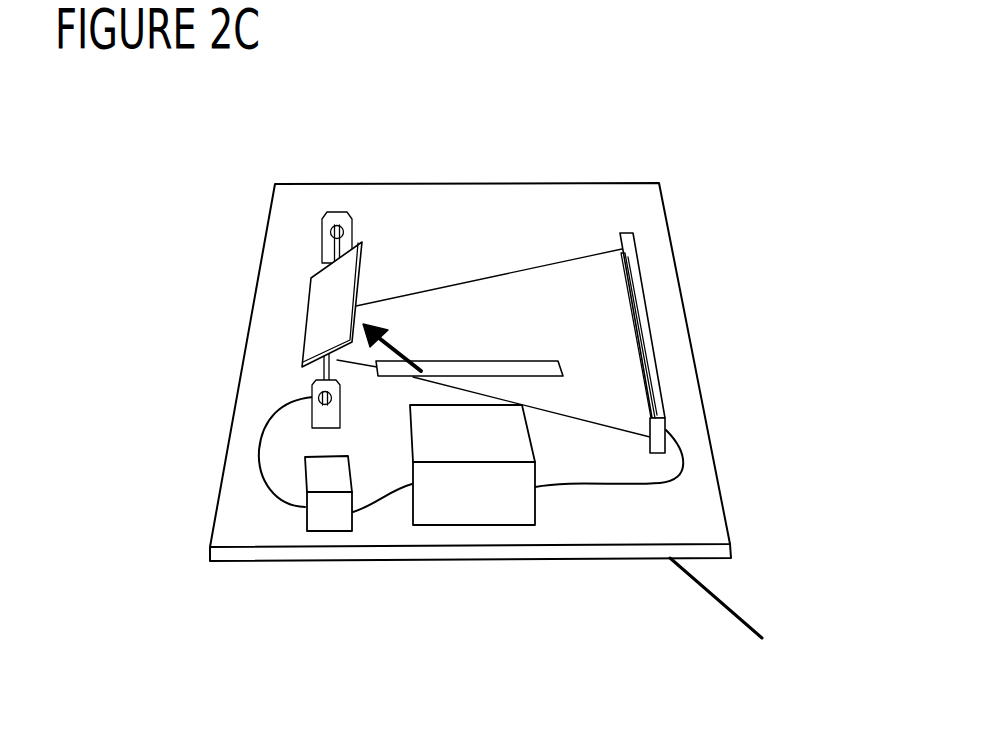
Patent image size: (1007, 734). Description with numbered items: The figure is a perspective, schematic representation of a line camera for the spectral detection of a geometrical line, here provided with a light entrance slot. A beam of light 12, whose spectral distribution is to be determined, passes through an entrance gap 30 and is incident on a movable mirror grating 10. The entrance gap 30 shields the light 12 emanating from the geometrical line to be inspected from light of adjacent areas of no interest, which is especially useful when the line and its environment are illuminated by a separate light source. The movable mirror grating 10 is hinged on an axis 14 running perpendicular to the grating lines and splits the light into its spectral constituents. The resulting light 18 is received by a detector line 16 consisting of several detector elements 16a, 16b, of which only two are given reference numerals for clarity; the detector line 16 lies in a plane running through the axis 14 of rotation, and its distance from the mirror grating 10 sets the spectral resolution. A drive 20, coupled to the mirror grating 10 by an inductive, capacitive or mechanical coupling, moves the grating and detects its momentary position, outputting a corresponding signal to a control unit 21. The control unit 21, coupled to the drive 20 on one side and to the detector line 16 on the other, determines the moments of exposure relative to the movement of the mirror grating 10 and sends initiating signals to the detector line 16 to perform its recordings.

The movable mirror grating 10 is at (317, 309).
The beam of light 12 is at (730, 607).
The axis 14 is at (322, 250).
The detector line 16 is at (677, 323).
The detector element 16a is at (635, 327).
The detector element 16b is at (643, 362).
The light 18 is at (592, 422).
The drive 20 is at (325, 518).
The control unit 21 is at (468, 515).
The entrance gap 30 is at (453, 371).